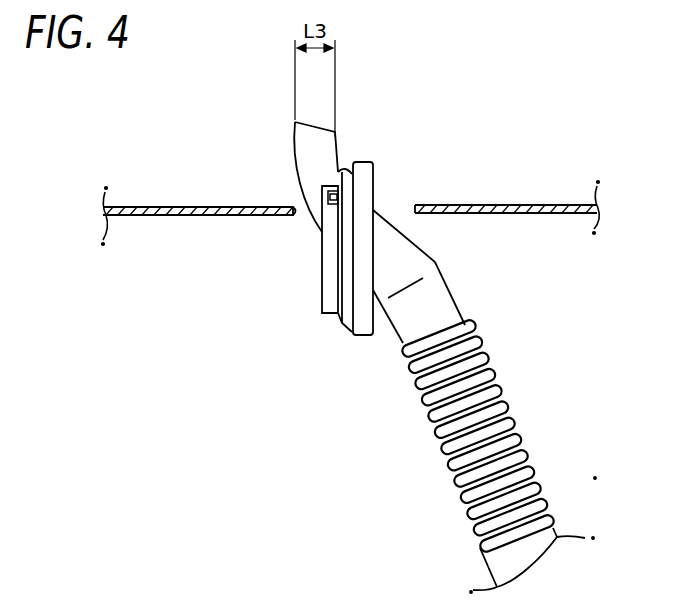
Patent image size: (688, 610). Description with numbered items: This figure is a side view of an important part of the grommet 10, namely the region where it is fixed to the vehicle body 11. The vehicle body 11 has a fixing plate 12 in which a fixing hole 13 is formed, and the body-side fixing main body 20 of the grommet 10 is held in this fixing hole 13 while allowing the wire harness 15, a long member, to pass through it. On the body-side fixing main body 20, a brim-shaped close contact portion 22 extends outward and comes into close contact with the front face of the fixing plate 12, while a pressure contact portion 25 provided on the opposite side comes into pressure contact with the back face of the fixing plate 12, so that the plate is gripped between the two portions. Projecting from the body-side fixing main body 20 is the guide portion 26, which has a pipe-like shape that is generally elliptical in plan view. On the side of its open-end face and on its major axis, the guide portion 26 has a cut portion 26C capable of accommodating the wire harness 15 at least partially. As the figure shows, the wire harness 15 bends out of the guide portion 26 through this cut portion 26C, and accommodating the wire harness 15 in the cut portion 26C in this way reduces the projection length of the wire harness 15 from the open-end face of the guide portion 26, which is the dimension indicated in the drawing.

The grommet 10 is at (505, 376).
The vehicle body 11 is at (566, 183).
The fixing plate 12 is at (538, 204).
The fixing hole 13 is at (297, 218).
The wire harness 15 is at (300, 152).
The body-side fixing main body 20 is at (345, 341).
The close contact portion 22 is at (366, 173).
The pressure contact portion 25 is at (344, 302).
The guide portion 26 is at (328, 283).
The cut portion 26C is at (338, 172).